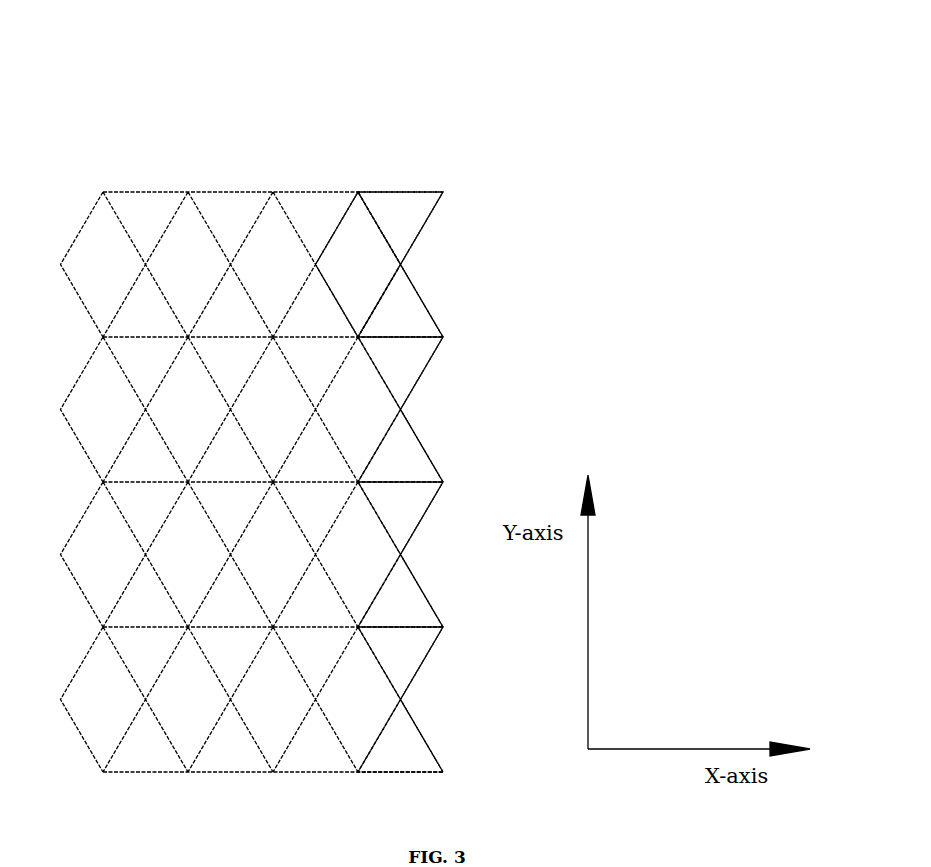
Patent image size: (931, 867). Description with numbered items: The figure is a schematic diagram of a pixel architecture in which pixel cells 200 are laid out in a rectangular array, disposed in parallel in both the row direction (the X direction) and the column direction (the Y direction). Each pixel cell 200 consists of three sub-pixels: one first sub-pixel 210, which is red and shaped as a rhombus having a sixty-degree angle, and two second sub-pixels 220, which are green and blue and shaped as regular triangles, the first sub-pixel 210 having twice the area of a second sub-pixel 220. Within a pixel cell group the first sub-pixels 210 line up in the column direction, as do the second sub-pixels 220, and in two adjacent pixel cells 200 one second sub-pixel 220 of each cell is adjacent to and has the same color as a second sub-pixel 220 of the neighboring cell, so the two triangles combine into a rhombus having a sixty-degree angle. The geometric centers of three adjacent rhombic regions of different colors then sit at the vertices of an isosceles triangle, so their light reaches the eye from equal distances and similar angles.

The pixel cell 200 is at (542, 113).
The first sub-pixel 210 is at (353, 233).
The second sub-pixel 220 is at (455, 735).